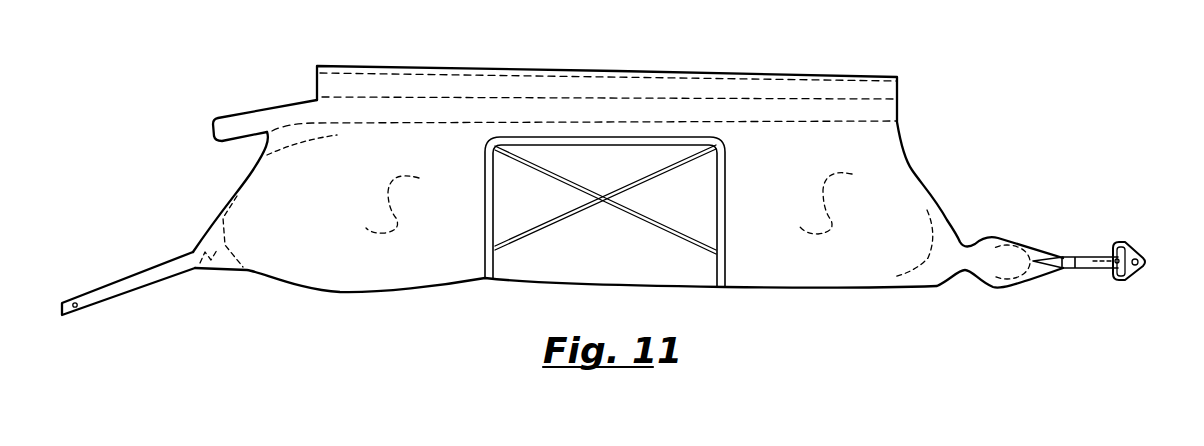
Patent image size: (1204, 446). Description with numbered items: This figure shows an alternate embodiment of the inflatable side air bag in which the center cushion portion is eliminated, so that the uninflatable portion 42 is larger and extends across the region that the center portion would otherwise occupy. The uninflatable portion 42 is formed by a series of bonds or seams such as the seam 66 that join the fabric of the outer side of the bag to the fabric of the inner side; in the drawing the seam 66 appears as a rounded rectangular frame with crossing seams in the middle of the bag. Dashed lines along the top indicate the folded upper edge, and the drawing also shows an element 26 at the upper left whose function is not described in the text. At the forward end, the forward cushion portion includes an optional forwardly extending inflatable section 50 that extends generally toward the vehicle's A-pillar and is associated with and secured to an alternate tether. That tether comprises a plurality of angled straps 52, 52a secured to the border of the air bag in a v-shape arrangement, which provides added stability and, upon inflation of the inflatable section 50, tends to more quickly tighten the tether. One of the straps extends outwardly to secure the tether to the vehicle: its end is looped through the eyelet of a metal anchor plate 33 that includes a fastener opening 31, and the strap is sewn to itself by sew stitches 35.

The handle 26 is at (278, 115).
The uninflatable portion 42 is at (582, 165).
The seam 66 is at (486, 212).
The inflatable section 50 is at (997, 263).
The angled strap 52 is at (1043, 264).
The angled strap 52a is at (1047, 257).
The sew stitches 35 is at (1101, 266).
The fastener opening 31 is at (1146, 262).
The anchor plate 33 is at (1123, 250).